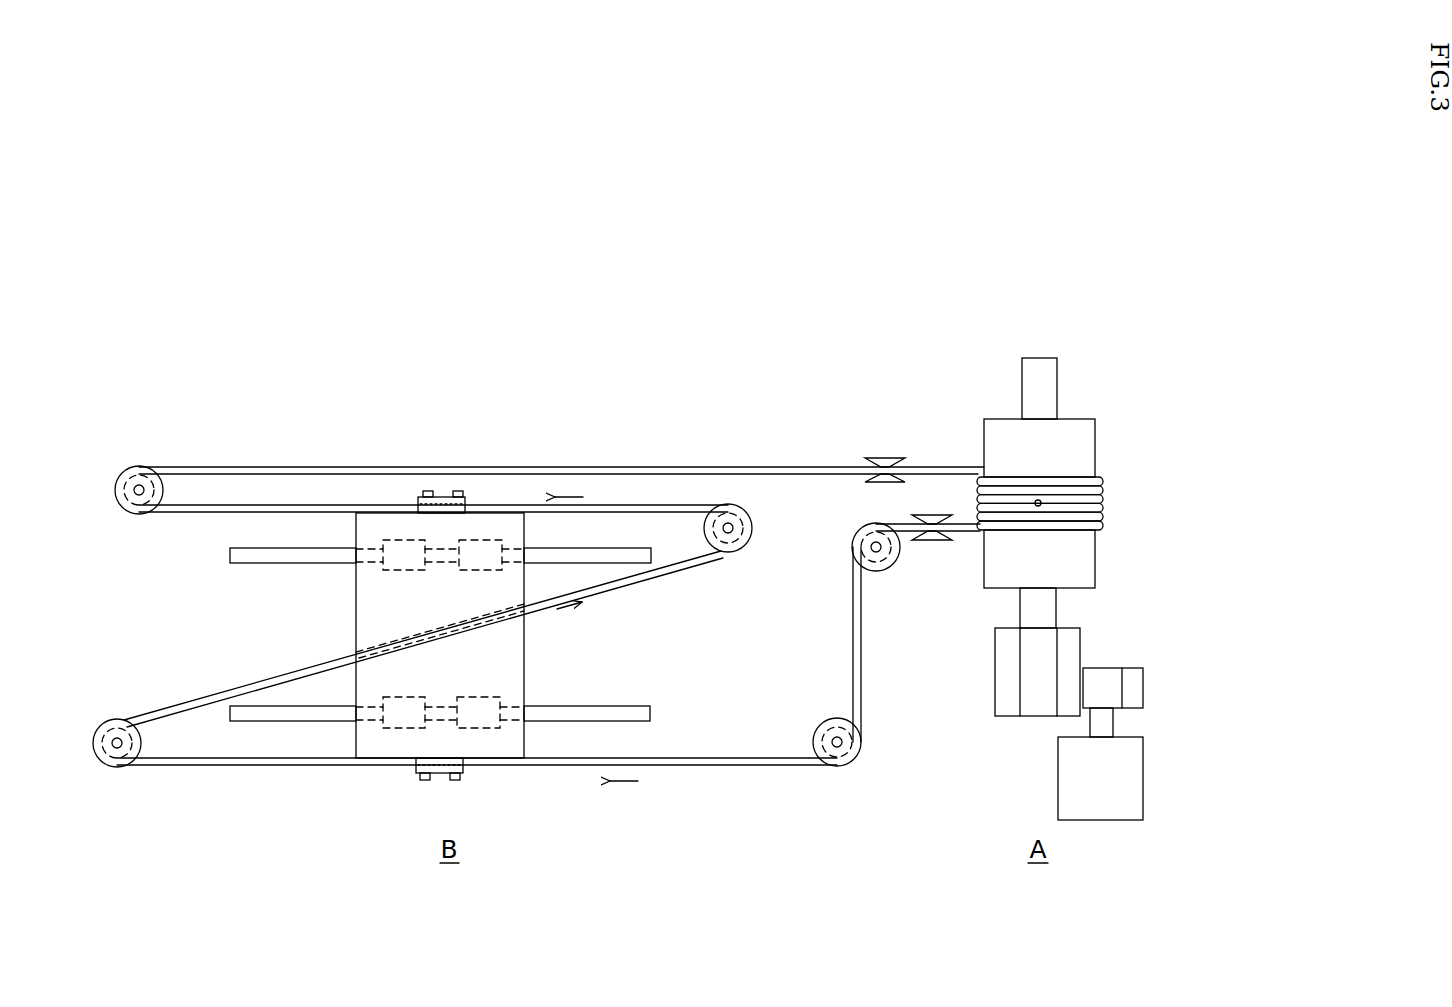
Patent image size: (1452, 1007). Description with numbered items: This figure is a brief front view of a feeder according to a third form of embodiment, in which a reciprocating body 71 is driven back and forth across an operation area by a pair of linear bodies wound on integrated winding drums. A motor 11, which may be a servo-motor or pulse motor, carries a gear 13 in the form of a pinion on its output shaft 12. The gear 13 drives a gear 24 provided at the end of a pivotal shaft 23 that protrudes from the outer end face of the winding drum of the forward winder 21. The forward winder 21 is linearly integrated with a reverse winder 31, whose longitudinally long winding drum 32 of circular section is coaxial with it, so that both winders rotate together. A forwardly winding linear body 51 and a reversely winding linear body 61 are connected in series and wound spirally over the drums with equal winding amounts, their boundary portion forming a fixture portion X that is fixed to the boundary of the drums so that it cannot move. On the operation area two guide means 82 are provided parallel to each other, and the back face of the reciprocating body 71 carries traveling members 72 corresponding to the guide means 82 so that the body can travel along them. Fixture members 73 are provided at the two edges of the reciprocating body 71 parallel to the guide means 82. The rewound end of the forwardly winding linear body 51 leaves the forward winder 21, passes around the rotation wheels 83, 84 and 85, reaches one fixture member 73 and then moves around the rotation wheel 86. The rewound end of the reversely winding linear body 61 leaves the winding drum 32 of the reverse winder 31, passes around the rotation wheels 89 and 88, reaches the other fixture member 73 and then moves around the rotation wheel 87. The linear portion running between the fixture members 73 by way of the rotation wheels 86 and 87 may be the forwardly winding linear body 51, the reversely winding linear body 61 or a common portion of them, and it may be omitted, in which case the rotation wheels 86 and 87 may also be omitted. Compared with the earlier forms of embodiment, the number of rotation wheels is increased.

The motor 11 is at (1078, 792).
The output shaft 12 is at (1095, 726).
The gear 13 is at (1130, 676).
The forward winder 21 is at (1098, 550).
The pivotal shaft 23 is at (1046, 600).
The gear 24 is at (1004, 680).
The reverse winder 31 is at (1091, 417).
The winding drum 32 is at (1003, 430).
The fixture portion X is at (1041, 502).
The forwardly winding linear body 51 is at (688, 766).
The reversely winding linear body 61 is at (284, 472).
The reciprocating body 71 is at (526, 668).
The traveling members 72 is at (402, 556).
The fixture members 73 is at (437, 500).
The guide means 82 is at (253, 556).
The rotation wheel 83 is at (935, 541).
The rotation wheel 84 is at (881, 562).
The rotation wheel 85 is at (818, 744).
The rotation wheel 86 is at (115, 752).
The rotation wheel 87 is at (739, 508).
The rotation wheel 88 is at (150, 482).
The rotation wheel 89 is at (878, 457).